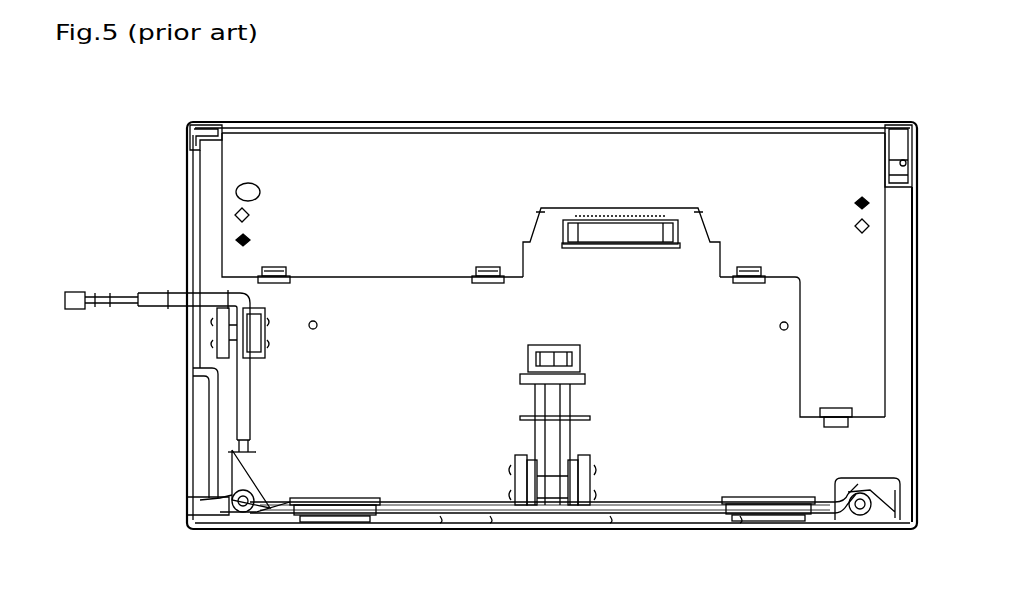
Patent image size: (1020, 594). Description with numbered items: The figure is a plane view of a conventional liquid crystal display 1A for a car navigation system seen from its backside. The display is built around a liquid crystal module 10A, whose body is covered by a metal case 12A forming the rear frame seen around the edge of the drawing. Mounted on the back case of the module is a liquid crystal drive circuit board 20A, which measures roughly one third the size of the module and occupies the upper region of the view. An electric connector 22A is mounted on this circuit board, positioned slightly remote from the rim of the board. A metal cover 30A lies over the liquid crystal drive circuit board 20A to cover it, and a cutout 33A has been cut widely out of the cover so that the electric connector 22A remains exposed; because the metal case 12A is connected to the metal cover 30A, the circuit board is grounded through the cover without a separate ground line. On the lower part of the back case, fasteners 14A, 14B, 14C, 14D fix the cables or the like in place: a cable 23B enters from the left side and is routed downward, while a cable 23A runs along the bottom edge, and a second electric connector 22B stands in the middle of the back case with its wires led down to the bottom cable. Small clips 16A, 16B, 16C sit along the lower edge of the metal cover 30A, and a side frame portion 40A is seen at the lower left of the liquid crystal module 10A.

The liquid crystal display 1A is at (480, 104).
The liquid crystal module 10A is at (604, 421).
The metal case 12A is at (424, 500).
The fastener 14A is at (266, 355).
The fastener 14B is at (264, 478).
The fastener 14C is at (368, 497).
The fastener 14D is at (592, 460).
The hook 16A is at (283, 284).
The hook 16B is at (486, 284).
The hook 16C is at (748, 284).
The liquid crystal drive circuit board 20A is at (704, 262).
The electric connector 22A is at (623, 237).
The electric connector 22B is at (585, 366).
The cable 23A is at (598, 514).
The cable 23B is at (251, 405).
The metal cover 30A is at (551, 271).
The cutout 33A is at (566, 218).
The side frame 40A is at (188, 436).